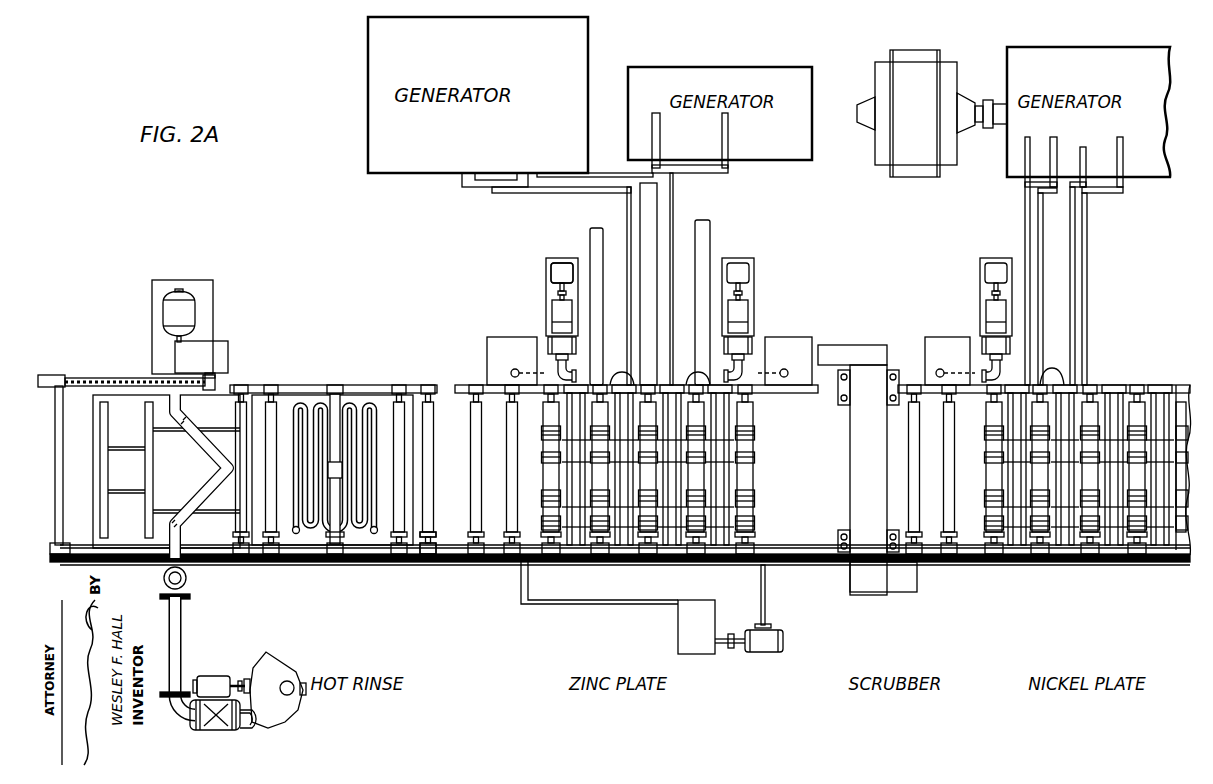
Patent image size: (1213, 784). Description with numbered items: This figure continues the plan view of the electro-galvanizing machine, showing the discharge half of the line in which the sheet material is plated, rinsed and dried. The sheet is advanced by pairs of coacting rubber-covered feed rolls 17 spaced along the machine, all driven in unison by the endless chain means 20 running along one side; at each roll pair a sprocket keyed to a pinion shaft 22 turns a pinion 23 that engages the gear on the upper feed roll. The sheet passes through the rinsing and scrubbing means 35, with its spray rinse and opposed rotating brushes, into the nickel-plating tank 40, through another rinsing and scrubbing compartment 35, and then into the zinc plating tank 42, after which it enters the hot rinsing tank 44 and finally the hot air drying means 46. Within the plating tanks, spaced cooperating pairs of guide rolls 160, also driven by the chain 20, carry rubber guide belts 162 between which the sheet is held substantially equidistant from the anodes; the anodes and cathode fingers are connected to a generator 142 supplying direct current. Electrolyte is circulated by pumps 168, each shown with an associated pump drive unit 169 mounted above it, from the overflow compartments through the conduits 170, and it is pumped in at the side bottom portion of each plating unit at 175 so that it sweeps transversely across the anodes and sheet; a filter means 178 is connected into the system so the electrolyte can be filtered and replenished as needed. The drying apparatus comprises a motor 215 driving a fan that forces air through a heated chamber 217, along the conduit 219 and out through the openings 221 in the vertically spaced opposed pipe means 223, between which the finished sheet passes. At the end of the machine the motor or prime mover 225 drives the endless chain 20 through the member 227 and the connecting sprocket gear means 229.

The feed rolls 17 is at (242, 428).
The endless chain means 20 is at (226, 562).
The pinion shaft 22 is at (430, 547).
The pinion 23 is at (437, 533).
The rinsing and scrubbing means 35 is at (857, 344).
The nickel-plating tank 40 is at (1131, 374).
The zinc plating tank 42 is at (475, 378).
The hot rinsing tank 44 is at (321, 379).
The hot air drying means 46 is at (211, 430).
The generator 142 is at (1137, 163).
The guide rolls 160 is at (1140, 405).
The rubber guide belts 162 is at (1088, 450).
The pumps 168 is at (560, 315).
The valve actuator 169 is at (550, 295).
The conduits 170 is at (600, 350).
The electrolyte inlet 175 is at (621, 384).
The filter means 178 is at (726, 593).
The motor 215 is at (217, 676).
The heated chamber 217 is at (222, 730).
The conduit 219 is at (182, 640).
The openings 221 is at (198, 462).
The opposed pipe means 223 is at (168, 540).
The motor or prime mover 225 is at (180, 292).
The member 227 is at (136, 378).
The sprocket gear means 229 is at (70, 568).